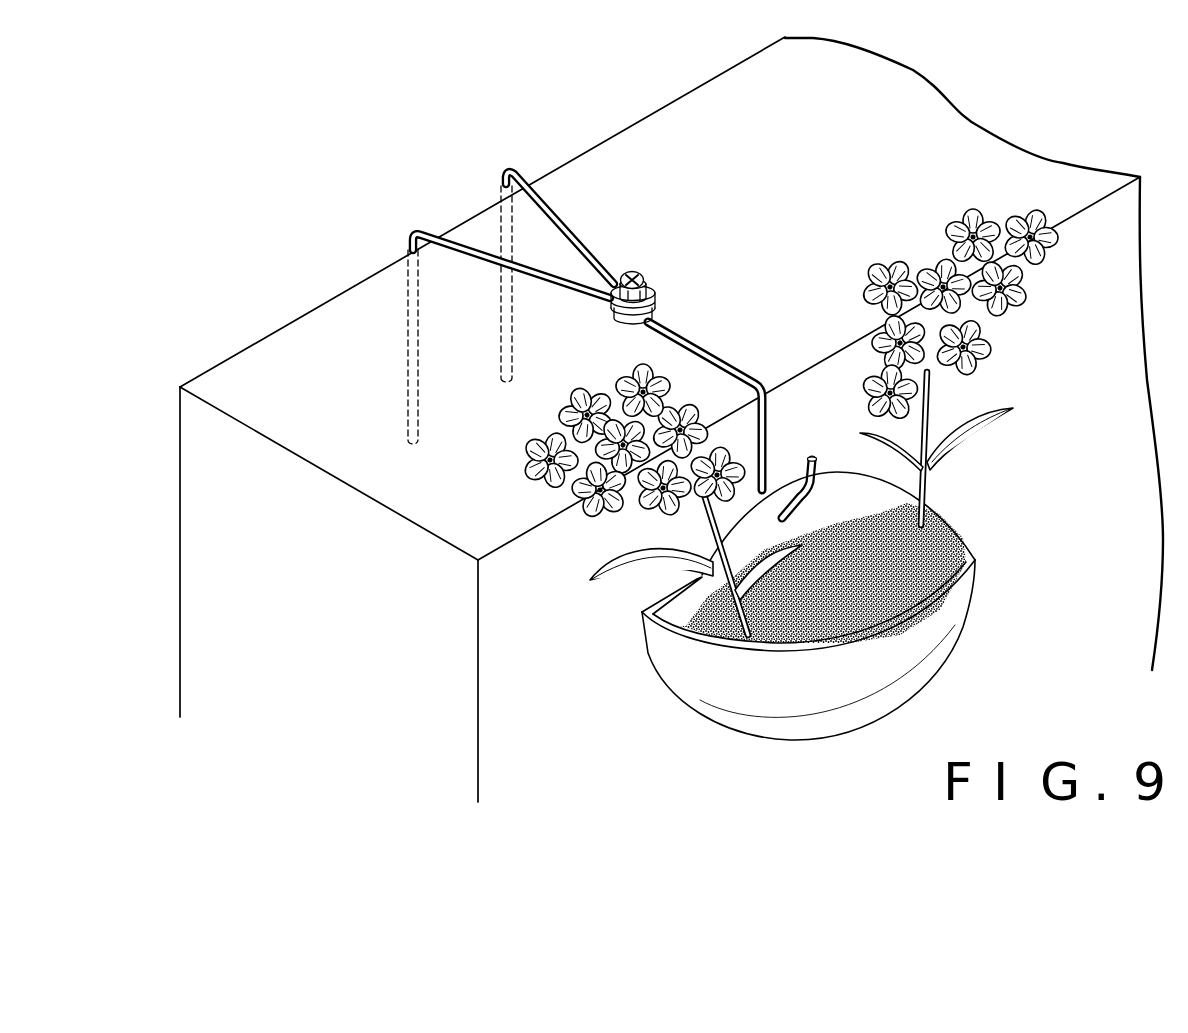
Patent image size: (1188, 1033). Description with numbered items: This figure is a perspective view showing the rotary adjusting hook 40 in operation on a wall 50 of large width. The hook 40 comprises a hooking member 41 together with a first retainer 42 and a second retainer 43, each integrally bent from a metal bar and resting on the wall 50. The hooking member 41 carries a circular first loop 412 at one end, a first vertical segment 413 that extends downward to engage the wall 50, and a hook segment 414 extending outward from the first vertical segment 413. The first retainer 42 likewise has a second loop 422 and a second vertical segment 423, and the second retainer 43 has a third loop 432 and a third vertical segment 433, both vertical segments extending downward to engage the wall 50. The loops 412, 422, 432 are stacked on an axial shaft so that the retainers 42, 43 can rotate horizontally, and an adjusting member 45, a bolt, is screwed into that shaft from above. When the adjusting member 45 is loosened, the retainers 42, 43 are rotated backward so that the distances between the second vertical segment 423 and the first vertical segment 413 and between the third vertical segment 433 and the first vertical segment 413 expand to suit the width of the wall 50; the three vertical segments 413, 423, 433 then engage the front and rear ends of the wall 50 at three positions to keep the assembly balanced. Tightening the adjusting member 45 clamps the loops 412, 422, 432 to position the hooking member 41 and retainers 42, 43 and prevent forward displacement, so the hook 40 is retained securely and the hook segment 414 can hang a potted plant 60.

The rotary adjusting hook 40 is at (587, 330).
The hooking member 41 is at (762, 405).
The first loop 412 is at (615, 322).
The first vertical segment 413 is at (766, 435).
The hook segment 414 is at (800, 497).
The first retainer 42 is at (454, 319).
The second loop 422 is at (657, 309).
The second vertical segment 423 is at (417, 290).
The second retainer 43 is at (534, 256).
The third loop 432 is at (657, 298).
The third vertical segment 433 is at (510, 232).
The adjusting member 45 is at (643, 277).
The wall 50 is at (295, 357).
The potted plant 60 is at (913, 652).